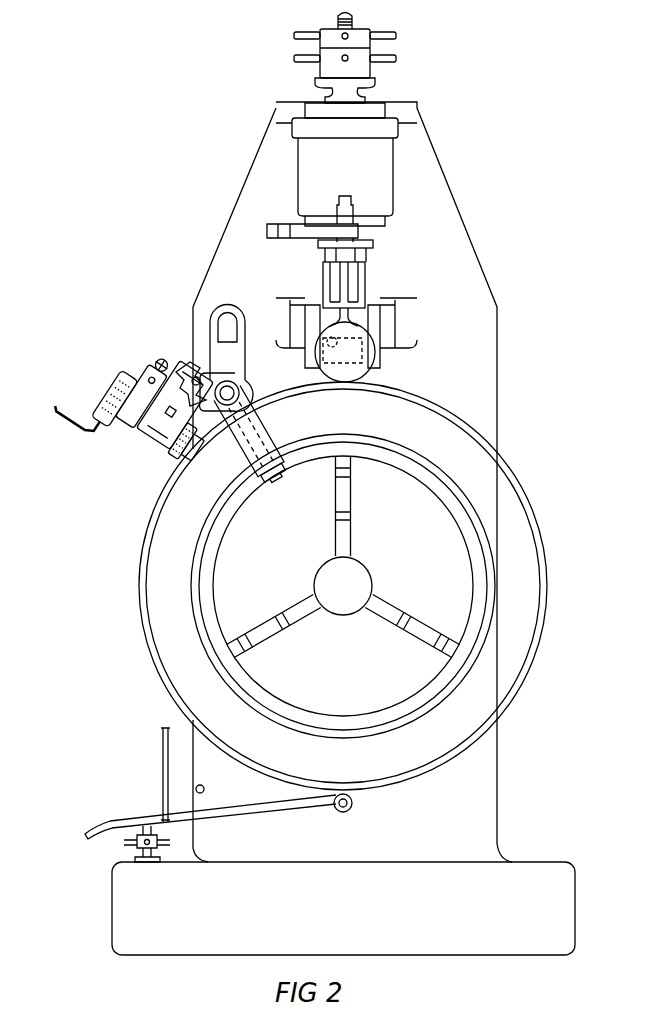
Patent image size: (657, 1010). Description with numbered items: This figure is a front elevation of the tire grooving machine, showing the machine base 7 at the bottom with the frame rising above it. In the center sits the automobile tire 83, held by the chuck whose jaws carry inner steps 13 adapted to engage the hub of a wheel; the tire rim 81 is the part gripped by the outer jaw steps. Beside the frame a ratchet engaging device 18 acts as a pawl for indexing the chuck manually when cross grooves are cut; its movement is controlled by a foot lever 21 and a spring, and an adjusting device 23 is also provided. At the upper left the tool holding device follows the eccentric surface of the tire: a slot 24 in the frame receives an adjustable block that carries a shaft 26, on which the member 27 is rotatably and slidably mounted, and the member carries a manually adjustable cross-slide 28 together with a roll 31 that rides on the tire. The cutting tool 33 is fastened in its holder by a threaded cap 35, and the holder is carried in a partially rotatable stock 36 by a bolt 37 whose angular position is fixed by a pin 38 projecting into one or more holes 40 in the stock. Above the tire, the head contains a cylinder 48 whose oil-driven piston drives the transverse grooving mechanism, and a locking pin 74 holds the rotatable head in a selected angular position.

The base 7 is at (474, 972).
The inner steps 13 is at (452, 644).
The ratchet engaging device 18 is at (160, 740).
The foot lever 21 is at (96, 821).
The adjusting device 23 is at (125, 846).
The slot 24 is at (214, 320).
The shaft 26 is at (241, 387).
The member 27 is at (151, 417).
The cross-slide 28 is at (169, 413).
The roll 31 is at (262, 432).
The cutting tool 33 is at (196, 468).
The threaded cap 35 is at (165, 456).
The stock 36 is at (176, 376).
The bolt 37 is at (127, 380).
The pin 38 is at (79, 428).
The holes 40 is at (103, 391).
The cylinder 48 is at (356, 168).
The locking pin 74 is at (347, 210).
The rim 81 is at (207, 577).
The automobile tire 83 is at (361, 556).